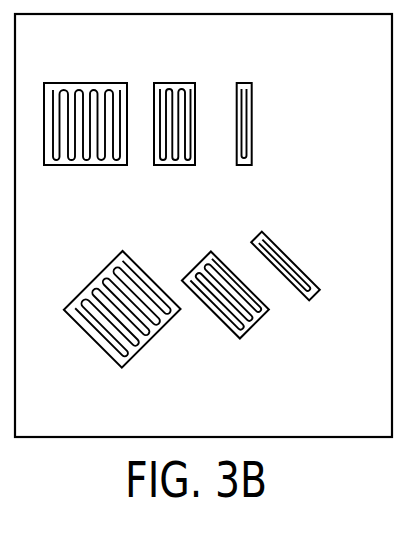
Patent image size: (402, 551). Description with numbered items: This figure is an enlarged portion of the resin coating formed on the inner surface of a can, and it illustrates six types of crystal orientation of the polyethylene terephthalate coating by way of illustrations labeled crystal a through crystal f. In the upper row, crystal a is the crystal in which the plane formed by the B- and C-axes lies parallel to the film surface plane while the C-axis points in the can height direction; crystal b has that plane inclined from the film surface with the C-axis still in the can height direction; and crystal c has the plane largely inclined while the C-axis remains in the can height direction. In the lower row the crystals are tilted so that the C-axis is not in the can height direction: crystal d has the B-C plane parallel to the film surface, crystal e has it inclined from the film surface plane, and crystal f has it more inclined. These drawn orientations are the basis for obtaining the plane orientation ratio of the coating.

The crystal a is at (85, 106).
The crystal b is at (174, 106).
The crystal c is at (244, 106).
The crystal d is at (122, 294).
The crystal e is at (225, 279).
The crystal f is at (283, 248).